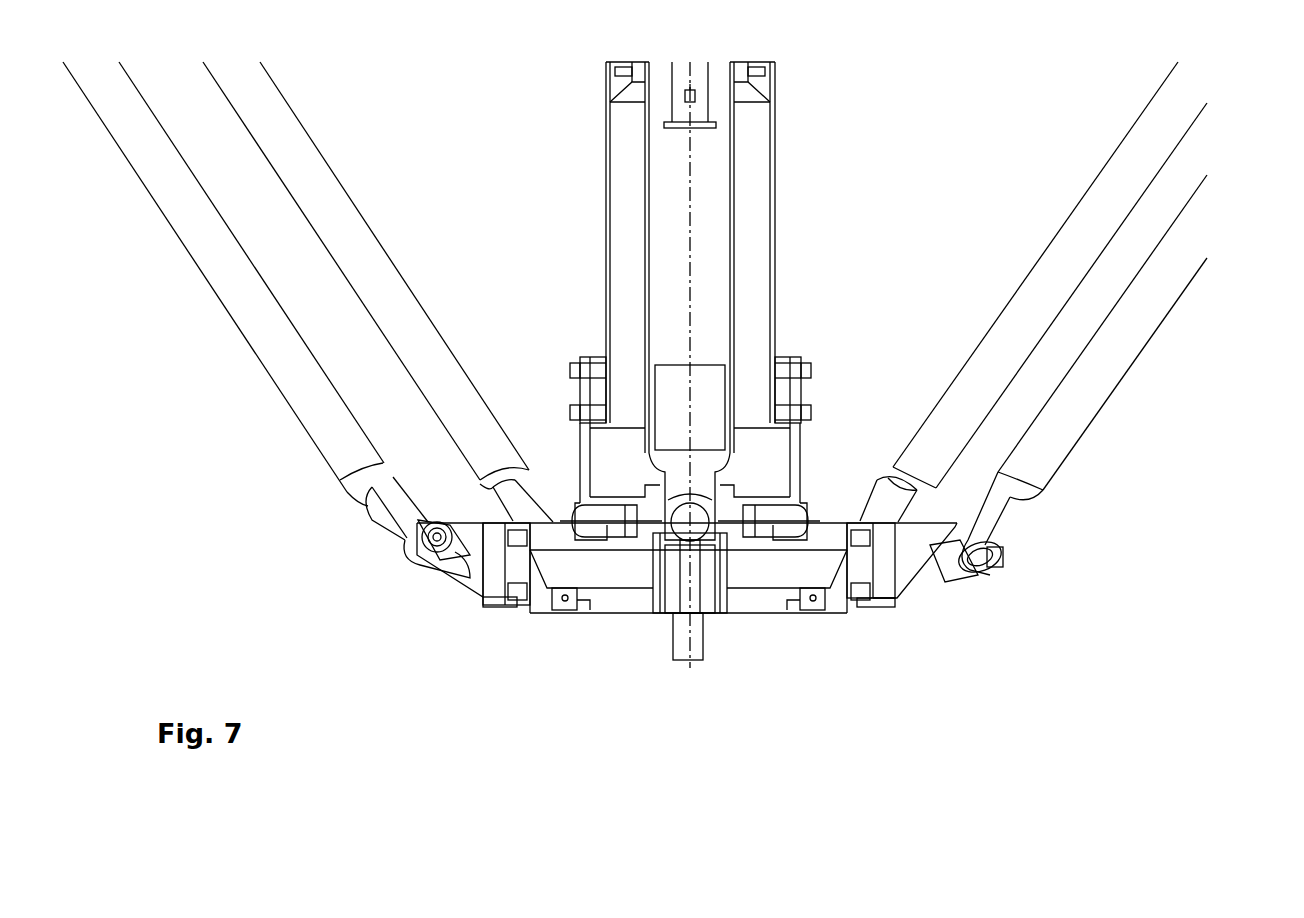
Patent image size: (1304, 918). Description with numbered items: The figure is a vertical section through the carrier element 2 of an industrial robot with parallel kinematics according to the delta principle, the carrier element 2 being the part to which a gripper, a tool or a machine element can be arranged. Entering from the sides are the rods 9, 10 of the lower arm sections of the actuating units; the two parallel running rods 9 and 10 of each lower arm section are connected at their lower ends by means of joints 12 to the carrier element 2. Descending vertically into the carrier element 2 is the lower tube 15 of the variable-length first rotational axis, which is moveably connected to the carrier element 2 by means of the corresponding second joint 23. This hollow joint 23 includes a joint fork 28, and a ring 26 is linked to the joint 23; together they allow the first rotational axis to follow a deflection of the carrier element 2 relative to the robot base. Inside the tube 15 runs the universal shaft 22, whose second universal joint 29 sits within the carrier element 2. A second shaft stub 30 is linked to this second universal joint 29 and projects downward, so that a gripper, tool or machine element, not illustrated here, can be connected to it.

The carrier element 2 is at (473, 582).
The rod 9 is at (1150, 296).
The rod 10 is at (1058, 283).
The joint 12 is at (400, 550).
The lower tube 15 is at (608, 148).
The universal shaft 22 is at (648, 186).
The second joint 23 is at (562, 462).
The ring 26 is at (537, 592).
The joint fork 28 is at (800, 465).
The second universal joint 29 is at (670, 488).
The second shaft stub 30 is at (697, 643).